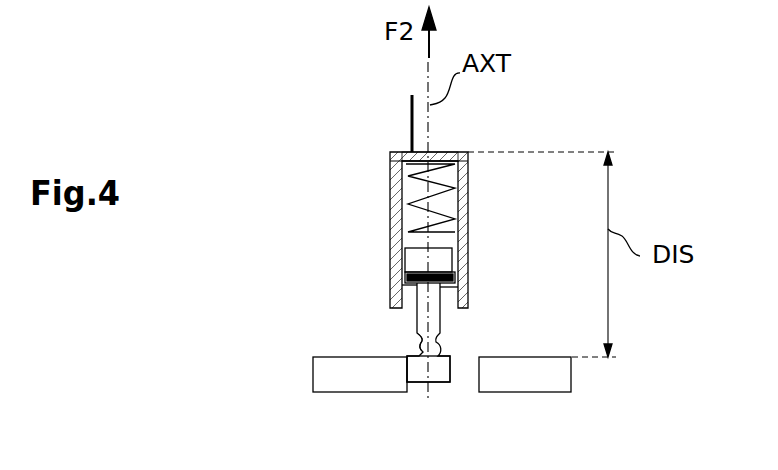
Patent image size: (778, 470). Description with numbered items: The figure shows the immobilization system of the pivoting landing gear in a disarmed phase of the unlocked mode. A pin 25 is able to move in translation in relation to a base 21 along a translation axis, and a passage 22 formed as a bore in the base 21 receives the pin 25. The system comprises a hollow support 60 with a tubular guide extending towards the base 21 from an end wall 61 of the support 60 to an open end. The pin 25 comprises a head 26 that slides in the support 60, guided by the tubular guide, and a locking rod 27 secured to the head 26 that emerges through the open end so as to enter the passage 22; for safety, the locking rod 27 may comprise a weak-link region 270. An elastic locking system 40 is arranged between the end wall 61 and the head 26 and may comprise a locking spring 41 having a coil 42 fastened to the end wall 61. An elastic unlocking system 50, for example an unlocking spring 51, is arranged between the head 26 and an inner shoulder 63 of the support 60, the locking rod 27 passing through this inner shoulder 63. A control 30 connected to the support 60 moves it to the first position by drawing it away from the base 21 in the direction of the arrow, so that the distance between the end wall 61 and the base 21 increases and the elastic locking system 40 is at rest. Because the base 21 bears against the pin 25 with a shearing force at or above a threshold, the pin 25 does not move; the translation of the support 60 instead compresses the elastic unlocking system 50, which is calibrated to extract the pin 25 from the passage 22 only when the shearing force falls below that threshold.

The base 21 is at (328, 357).
The passage 22 is at (462, 383).
The pin 25 is at (418, 382).
The head 26 is at (445, 262).
The locking rod 27 is at (435, 363).
The control 30 is at (412, 119).
The elastic locking system 40 is at (490, 198).
The locking spring 41 is at (453, 178).
The coil 42 is at (418, 157).
The elastic unlocking system 50 is at (376, 264).
The unlocking spring 51 is at (424, 262).
The support 60 is at (390, 217).
The end wall 61 is at (450, 152).
The inner shoulder 63 is at (441, 288).
The weak-link region 270 is at (418, 342).